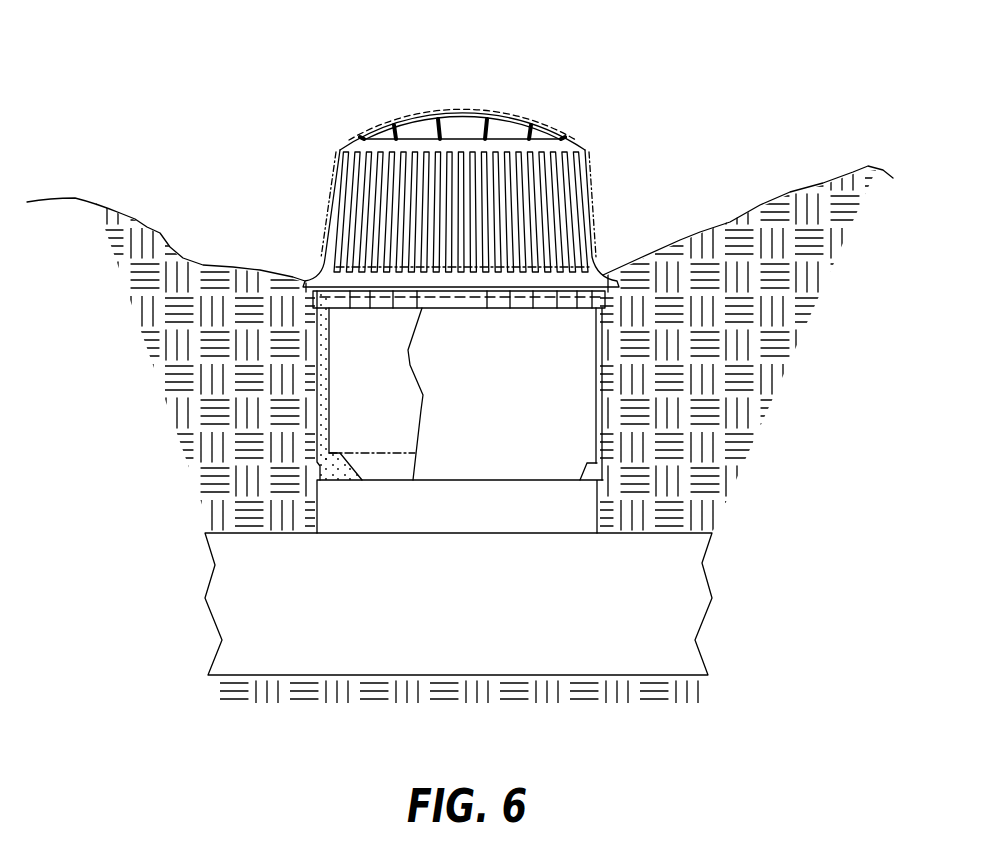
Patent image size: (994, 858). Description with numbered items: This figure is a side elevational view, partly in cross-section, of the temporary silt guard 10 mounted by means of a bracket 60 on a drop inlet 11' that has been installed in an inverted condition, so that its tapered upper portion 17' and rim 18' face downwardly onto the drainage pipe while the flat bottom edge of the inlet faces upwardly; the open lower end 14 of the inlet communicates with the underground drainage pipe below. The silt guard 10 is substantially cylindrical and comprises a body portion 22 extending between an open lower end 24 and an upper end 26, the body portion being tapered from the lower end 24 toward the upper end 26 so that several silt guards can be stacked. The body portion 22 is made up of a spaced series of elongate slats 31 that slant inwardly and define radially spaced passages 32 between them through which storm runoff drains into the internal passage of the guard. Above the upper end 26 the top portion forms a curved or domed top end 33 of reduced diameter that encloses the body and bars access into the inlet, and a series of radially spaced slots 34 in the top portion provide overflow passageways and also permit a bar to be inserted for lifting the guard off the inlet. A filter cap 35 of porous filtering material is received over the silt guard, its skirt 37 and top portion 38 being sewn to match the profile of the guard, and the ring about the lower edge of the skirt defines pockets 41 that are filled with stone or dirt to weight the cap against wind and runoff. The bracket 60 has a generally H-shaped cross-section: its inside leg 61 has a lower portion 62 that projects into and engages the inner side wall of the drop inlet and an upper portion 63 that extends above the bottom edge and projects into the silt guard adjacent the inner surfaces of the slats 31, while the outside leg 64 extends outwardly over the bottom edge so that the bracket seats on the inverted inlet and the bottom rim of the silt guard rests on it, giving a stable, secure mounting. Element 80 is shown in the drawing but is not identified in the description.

The temporary silt guard 10 is at (419, 182).
The drop inlet 11' is at (458, 559).
The open lower end 14 is at (497, 276).
The tapered upper portion 17' is at (460, 512).
The rim 18' is at (573, 509).
The body portion 22 is at (590, 222).
The lower end 24 is at (592, 282).
The upper end 26 is at (580, 148).
The slats 31 is at (520, 183).
The passages 32 is at (579, 227).
The domed top end 33 is at (462, 114).
The slots 34 is at (498, 134).
The filter cap 35 is at (401, 96).
The skirt 37 is at (328, 245).
The top portion 38 is at (350, 133).
The pockets 41 is at (325, 258).
The bracket 60 is at (297, 296).
The inside leg 61 is at (302, 272).
The lower portion 62 is at (329, 310).
The upper portion 63 is at (300, 283).
The outside leg 64 is at (313, 302).
The gasket 80 is at (293, 253).